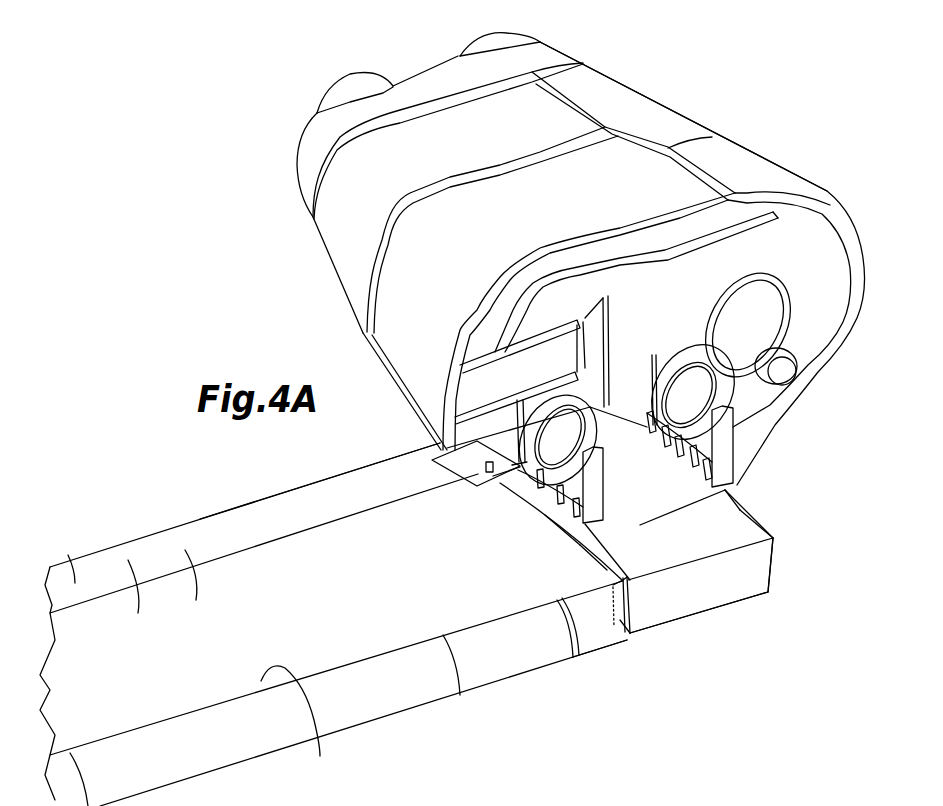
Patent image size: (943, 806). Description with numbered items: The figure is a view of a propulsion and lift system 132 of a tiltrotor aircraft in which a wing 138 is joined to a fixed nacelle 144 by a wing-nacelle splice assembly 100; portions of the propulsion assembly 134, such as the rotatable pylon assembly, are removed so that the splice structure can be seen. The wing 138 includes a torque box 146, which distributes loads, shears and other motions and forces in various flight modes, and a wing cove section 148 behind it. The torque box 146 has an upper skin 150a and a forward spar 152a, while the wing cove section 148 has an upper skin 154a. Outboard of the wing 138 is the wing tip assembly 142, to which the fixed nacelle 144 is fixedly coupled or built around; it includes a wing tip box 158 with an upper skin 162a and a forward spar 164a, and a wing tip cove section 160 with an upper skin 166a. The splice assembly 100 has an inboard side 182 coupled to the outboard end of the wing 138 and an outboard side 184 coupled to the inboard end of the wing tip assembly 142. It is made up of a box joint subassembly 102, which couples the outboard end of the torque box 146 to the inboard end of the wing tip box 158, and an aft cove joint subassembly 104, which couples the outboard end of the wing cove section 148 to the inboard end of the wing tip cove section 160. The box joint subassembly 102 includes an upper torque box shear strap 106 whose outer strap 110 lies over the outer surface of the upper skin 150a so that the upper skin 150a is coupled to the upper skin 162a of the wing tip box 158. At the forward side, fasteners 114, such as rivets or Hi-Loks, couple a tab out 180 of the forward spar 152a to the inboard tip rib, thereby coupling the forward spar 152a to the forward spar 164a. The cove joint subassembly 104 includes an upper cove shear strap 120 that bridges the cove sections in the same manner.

The wing-nacelle splice assembly 100 is at (470, 492).
The box joint subassembly 102 is at (495, 500).
The cove joint subassembly 104 is at (424, 459).
The upper torque box shear strap 106 is at (498, 487).
The outer strap 110 is at (565, 540).
The fasteners 114 is at (622, 624).
The upper cove shear strap 120 is at (432, 478).
The propulsion and lift system 132 is at (260, 304).
The propulsion assembly 134 is at (667, 99).
The wing 138 is at (128, 560).
The wing tip assembly 142 is at (747, 514).
The fixed nacelle 144 is at (716, 130).
The torque box 146 is at (185, 550).
The wing cove section 148 is at (223, 521).
The upper skin 150a is at (307, 722).
The forward spar 152a is at (600, 631).
The upper skin 154a is at (68, 555).
The wing tip box 158 is at (760, 533).
The wing tip cove section 160 is at (613, 407).
The upper skin 162a is at (733, 493).
The forward spar 164a is at (740, 593).
The upper skin 166a is at (632, 417).
The tab out 180 is at (622, 594).
The inboard side 182 is at (590, 558).
The outboard side 184 is at (607, 540).